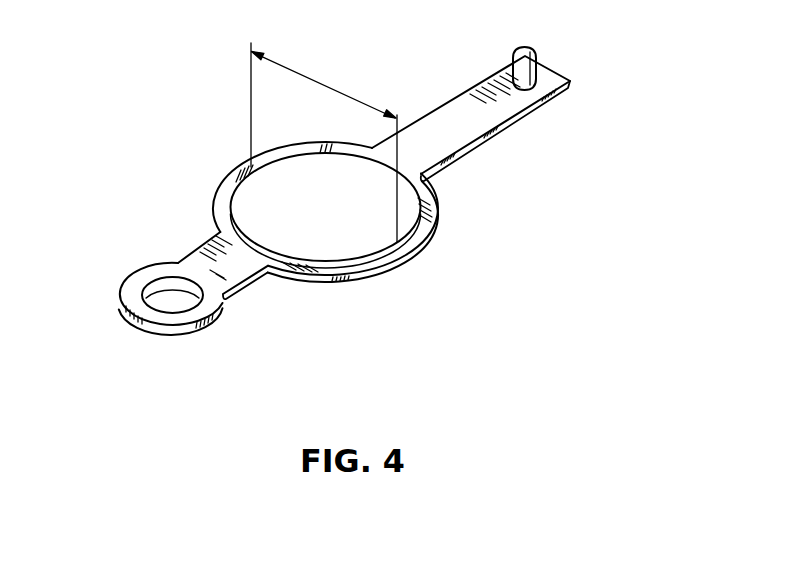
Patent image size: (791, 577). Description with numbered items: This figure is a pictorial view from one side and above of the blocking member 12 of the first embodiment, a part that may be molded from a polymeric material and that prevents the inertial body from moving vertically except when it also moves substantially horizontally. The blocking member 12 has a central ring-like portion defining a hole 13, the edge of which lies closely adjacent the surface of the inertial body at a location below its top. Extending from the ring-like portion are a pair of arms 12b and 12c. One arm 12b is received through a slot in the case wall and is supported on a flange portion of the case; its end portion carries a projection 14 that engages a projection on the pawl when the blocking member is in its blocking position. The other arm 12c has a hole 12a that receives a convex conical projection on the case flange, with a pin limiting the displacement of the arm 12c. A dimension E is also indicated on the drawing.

The blocking member 12 is at (374, 220).
The hole 12a is at (165, 285).
The arm 12b is at (498, 117).
The arm 12c is at (237, 285).
The hole 13 is at (412, 240).
The projection 14 is at (536, 58).
The dimension E (distance) E is at (324, 142).